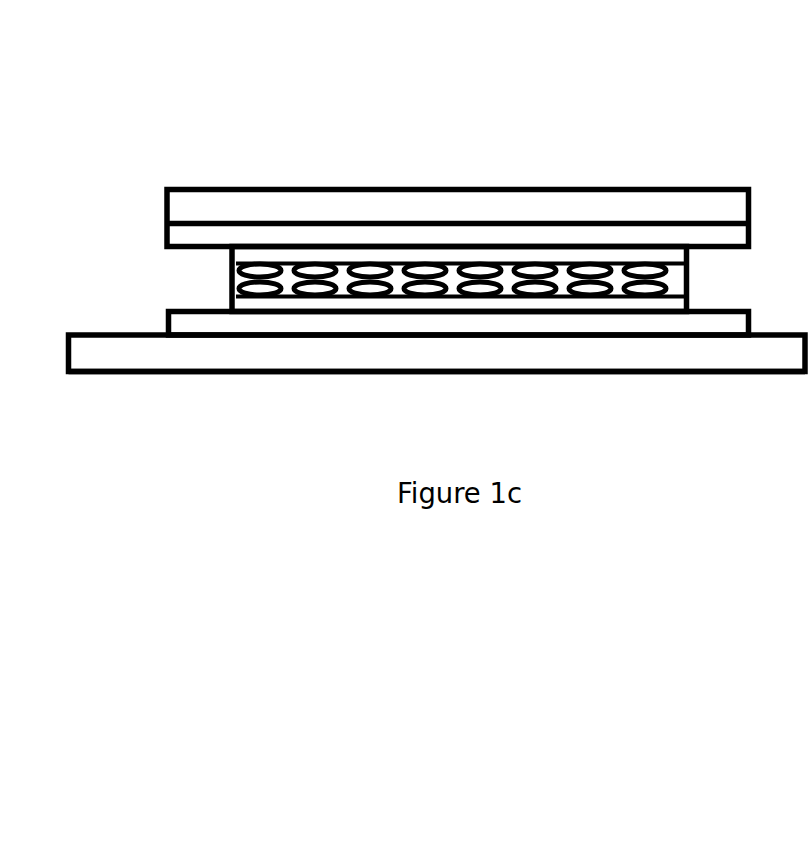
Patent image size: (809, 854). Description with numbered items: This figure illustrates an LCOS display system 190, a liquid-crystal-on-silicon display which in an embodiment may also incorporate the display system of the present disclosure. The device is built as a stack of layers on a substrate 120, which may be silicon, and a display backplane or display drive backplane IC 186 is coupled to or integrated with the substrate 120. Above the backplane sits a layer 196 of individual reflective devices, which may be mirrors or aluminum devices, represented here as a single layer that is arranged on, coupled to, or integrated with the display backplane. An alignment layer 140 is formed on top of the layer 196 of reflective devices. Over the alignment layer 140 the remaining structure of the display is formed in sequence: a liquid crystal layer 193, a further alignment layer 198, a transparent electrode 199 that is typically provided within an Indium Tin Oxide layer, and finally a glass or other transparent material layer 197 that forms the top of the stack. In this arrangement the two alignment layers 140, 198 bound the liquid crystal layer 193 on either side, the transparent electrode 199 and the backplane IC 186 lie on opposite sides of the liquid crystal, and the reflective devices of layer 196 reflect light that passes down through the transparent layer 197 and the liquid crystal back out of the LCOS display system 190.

The substrate 120 is at (303, 328).
The alignment layer 140 is at (255, 310).
The display drive backplane IC 186 is at (125, 353).
The LCOS display system 190 is at (602, 410).
The liquid crystal layer 193 is at (260, 270).
The layer of individual reflective devices 196 is at (515, 325).
The glass or other transparent material layer 197 is at (603, 207).
The alignment layer 198 is at (370, 257).
The transparent electrode 199 is at (715, 235).